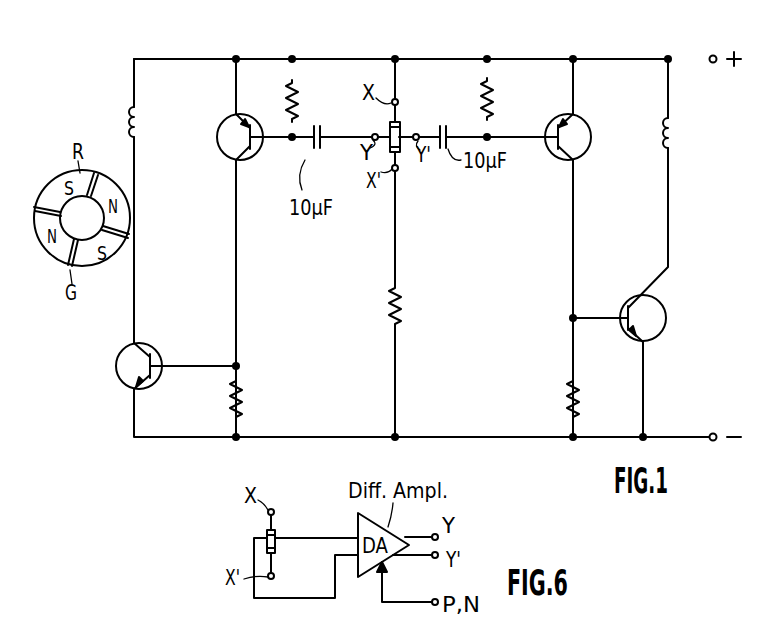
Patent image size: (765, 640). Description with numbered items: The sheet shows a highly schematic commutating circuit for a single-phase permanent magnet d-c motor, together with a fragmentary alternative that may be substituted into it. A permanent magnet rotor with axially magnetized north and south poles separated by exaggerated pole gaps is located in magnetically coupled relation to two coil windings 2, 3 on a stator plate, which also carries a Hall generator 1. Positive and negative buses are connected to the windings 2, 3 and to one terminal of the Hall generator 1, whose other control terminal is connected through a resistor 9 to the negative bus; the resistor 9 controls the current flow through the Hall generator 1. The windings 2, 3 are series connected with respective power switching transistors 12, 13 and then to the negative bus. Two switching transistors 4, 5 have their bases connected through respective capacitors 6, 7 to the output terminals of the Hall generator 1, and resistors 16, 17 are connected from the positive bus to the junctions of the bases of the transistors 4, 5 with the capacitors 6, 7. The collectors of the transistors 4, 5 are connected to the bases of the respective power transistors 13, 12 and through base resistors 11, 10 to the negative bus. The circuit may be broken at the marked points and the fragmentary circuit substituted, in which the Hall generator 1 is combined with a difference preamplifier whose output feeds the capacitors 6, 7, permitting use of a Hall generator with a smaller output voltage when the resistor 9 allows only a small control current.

In FIG. 1, the Hall generator 1 is at (400, 122).
In FIG. 6, the Hall generator 1 is at (267, 534).
In FIG. 1, the coil winding 2 is at (139, 122).
In FIG. 1, the coil winding 3 is at (674, 134).
In FIG. 1, the switching transistor 4 is at (585, 143).
In FIG. 1, the switching transistor 5 is at (240, 162).
In FIG. 1, the capacitor 6 is at (441, 150).
In FIG. 1, the capacitor 7 is at (316, 150).
In FIG. 1, the resistor 9 is at (401, 306).
In FIG. 1, the base resistor 10 is at (242, 398).
In FIG. 1, the base resistor 11 is at (566, 403).
In FIG. 1, the power switching transistor 12 is at (142, 347).
In FIG. 1, the power switching transistor 13 is at (665, 318).
In FIG. 1, the resistor 16 is at (494, 104).
In FIG. 1, the resistor 17 is at (299, 106).